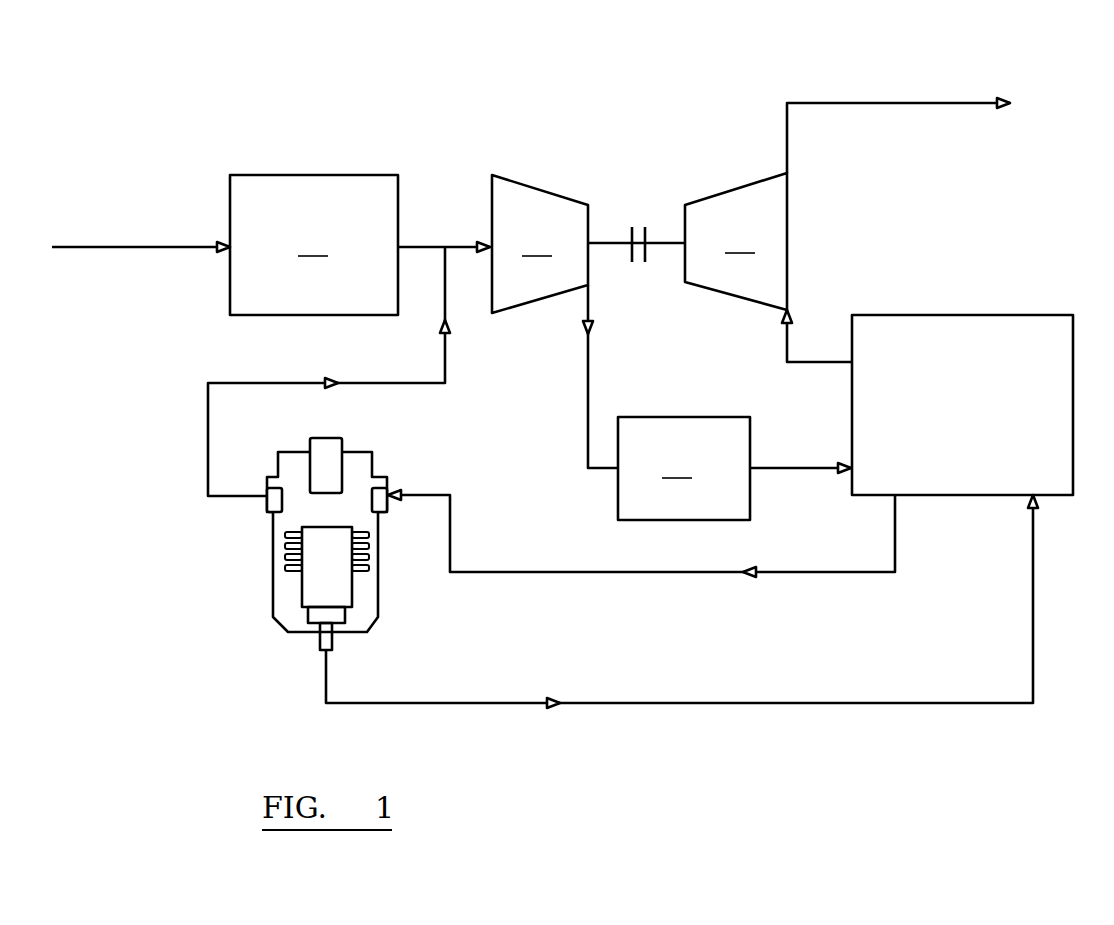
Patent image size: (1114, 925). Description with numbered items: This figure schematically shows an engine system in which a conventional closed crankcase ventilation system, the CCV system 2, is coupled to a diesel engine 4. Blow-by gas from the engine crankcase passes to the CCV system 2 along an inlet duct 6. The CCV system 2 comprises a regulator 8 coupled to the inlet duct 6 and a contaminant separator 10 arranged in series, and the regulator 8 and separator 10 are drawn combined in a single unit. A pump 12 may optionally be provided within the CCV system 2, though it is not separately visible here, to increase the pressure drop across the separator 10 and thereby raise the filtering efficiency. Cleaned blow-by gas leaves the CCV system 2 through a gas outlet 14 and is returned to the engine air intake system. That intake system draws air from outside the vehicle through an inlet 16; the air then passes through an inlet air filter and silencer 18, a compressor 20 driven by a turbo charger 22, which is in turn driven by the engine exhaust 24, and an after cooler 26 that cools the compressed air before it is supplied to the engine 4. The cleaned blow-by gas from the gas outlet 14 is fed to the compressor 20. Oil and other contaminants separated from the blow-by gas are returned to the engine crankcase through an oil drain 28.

The CCV system 2 is at (260, 563).
The diesel engine 4 is at (1000, 330).
The inlet duct 6 is at (850, 573).
The regulator 8 is at (332, 452).
The contaminant separator 10 is at (318, 583).
The pump 12 is at (267, 508).
The gas outlet 14 is at (253, 383).
The inlet 16 is at (127, 247).
The inlet air filter and silencer 18 is at (360, 245).
The compressor 20 is at (588, 321).
The turbo charger 22 is at (768, 267).
The engine exhaust 24 is at (920, 102).
The after cooler 26 is at (734, 468).
The oil drain 28 is at (842, 704).